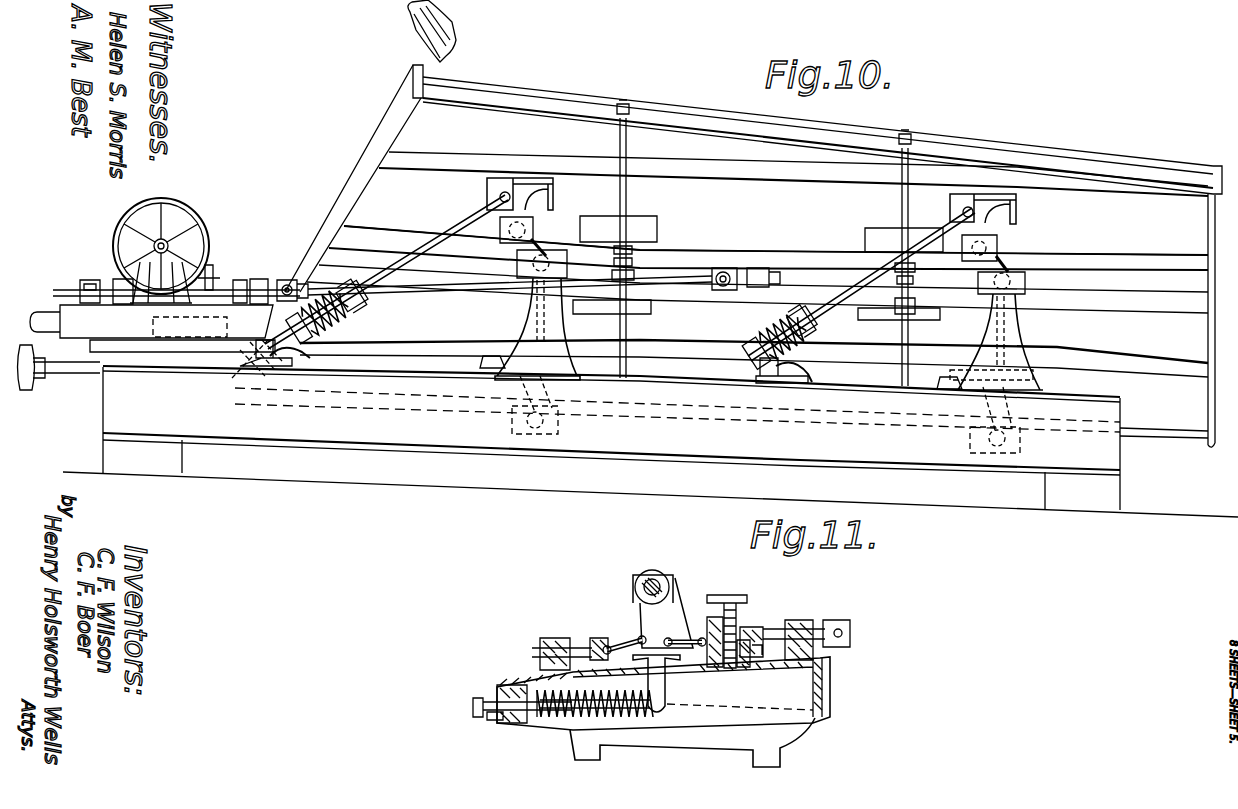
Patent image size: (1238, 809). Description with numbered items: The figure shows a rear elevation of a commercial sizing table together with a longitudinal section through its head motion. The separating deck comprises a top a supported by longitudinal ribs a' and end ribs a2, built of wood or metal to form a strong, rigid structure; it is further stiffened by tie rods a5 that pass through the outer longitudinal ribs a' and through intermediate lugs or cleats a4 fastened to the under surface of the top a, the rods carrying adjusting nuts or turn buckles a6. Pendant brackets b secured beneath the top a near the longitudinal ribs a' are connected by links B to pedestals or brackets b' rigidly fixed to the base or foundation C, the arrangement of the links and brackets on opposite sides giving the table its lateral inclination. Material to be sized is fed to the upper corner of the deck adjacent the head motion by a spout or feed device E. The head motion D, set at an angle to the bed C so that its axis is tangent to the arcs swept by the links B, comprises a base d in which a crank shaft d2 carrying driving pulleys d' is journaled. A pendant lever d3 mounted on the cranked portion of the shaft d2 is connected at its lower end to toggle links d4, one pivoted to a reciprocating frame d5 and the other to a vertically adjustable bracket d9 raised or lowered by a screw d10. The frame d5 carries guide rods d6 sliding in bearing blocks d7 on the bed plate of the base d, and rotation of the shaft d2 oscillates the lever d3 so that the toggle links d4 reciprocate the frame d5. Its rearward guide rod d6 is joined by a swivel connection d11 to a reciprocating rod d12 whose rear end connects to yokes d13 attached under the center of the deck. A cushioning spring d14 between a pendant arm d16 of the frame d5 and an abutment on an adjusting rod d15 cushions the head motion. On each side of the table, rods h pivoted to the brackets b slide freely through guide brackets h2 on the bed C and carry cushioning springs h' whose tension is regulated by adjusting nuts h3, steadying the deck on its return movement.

In FIG. 10, the top a is at (776, 235).
In FIG. 10, the longitudinal ribs a' is at (754, 275).
In FIG. 10, the end ribs a2 is at (440, 127).
In FIG. 10, the lugs or cleats a4 is at (625, 240).
In FIG. 10, the tie rods a5 is at (618, 144).
In FIG. 10, the adjusting nuts or turn buckles a6 is at (645, 262).
In FIG. 10, the pendant brackets b is at (741, 300).
In FIG. 10, the pedestals or brackets b' is at (774, 372).
In FIG. 10, the links B is at (540, 235).
In FIG. 10, the base or foundation C is at (700, 468).
In FIG. 10, the head motion D is at (147, 347).
In FIG. 11, the head motion D is at (677, 712).
In FIG. 10, the spout or feed device E is at (458, 36).
In FIG. 10, the base d is at (214, 255).
In FIG. 10, the driving pulleys d' is at (165, 242).
In FIG. 11, the crank shaft d2 is at (660, 570).
In FIG. 11, the pendant lever d3 is at (678, 600).
In FIG. 11, the toggle links d4 is at (622, 640).
In FIG. 11, the reciprocating frame d5 is at (592, 640).
In FIG. 10, the guide rods d6 is at (102, 280).
In FIG. 11, the guide rods d6 is at (530, 652).
In FIG. 11, the bearing blocks d7 is at (548, 640).
In FIG. 11, the vertically adjustable bracket d9 is at (735, 630).
In FIG. 11, the screw d10 is at (733, 610).
In FIG. 11, the swivel connection d11 is at (840, 622).
In FIG. 10, the reciprocating rod d12 is at (472, 290).
In FIG. 10, the yokes d13 is at (728, 292).
In FIG. 11, the cushioning spring d14 is at (622, 718).
In FIG. 11, the adjusting rod d15 is at (508, 722).
In FIG. 11, the pendant arm d16 is at (666, 683).
In FIG. 10, the rods h is at (620, 278).
In FIG. 10, the cushioning springs h' is at (548, 328).
In FIG. 10, the guide brackets h2 is at (300, 360).
In FIG. 10, the adjusting nuts h3 is at (366, 297).